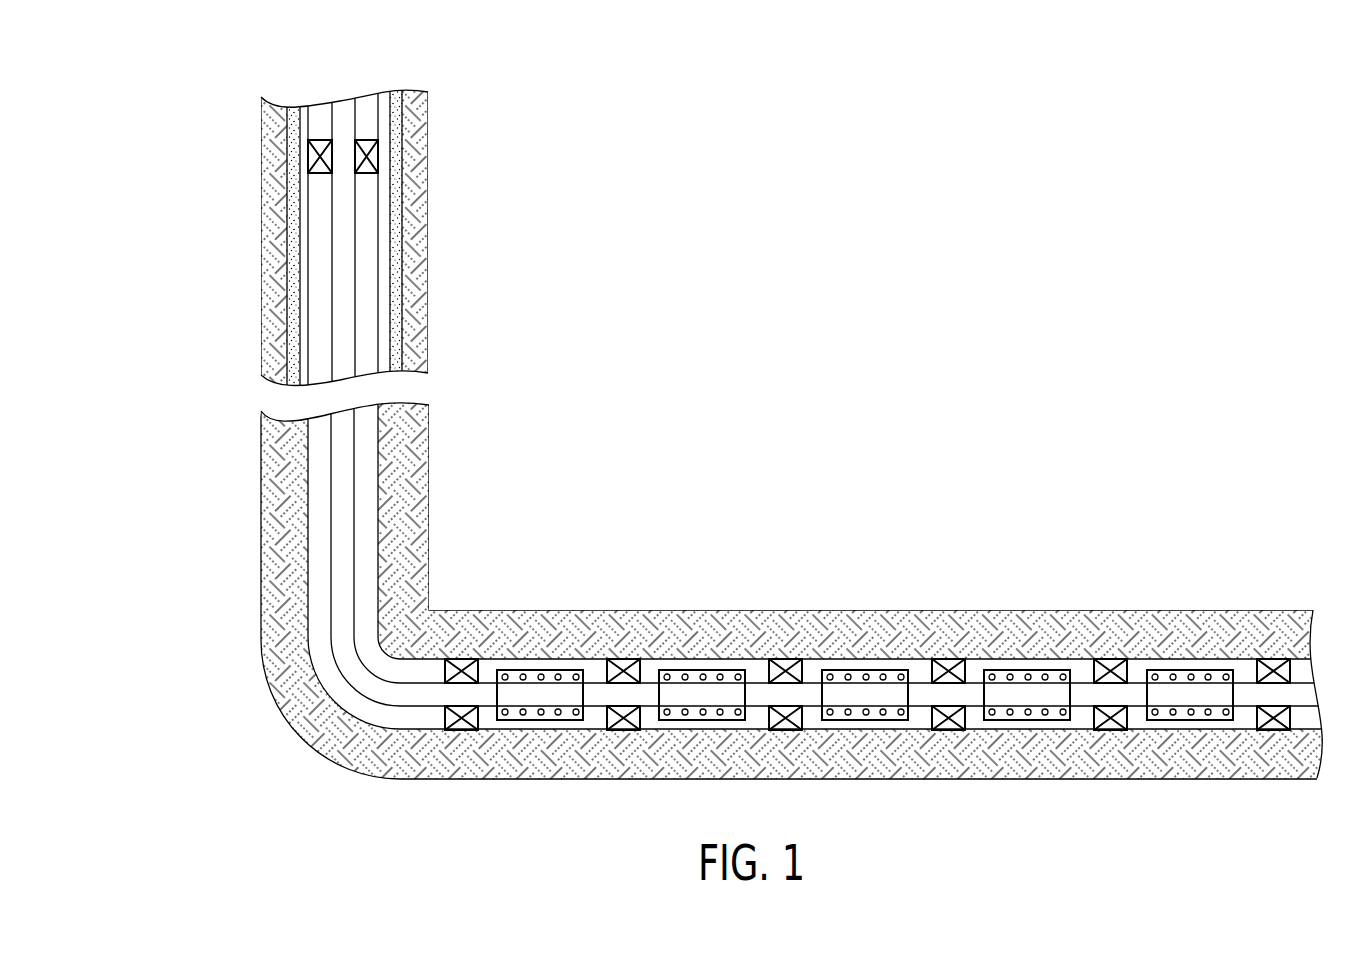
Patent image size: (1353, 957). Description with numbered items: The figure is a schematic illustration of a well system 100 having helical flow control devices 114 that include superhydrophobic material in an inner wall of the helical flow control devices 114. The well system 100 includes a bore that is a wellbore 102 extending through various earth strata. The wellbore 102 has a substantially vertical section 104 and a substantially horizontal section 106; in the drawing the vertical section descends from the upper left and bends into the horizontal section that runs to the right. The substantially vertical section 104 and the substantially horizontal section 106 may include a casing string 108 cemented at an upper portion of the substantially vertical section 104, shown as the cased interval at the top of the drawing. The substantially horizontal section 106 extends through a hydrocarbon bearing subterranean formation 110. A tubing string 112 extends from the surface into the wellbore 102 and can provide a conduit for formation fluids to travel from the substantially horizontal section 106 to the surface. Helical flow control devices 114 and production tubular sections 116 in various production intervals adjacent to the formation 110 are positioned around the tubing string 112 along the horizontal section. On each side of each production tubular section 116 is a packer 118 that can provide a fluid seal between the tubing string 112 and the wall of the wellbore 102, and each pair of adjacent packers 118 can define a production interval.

The well system 100 is at (229, 131).
The wellbore 102 is at (380, 505).
The substantially vertical section 104 is at (378, 442).
The substantially horizontal section 106 is at (750, 659).
The casing string 108 is at (384, 250).
The hydrocarbon bearing subterranean formation 110 is at (916, 490).
The tubing string 112 is at (357, 553).
The helical flow control devices 114 is at (1190, 672).
The production tubular sections 116 is at (1155, 673).
The packer 118 is at (1112, 722).